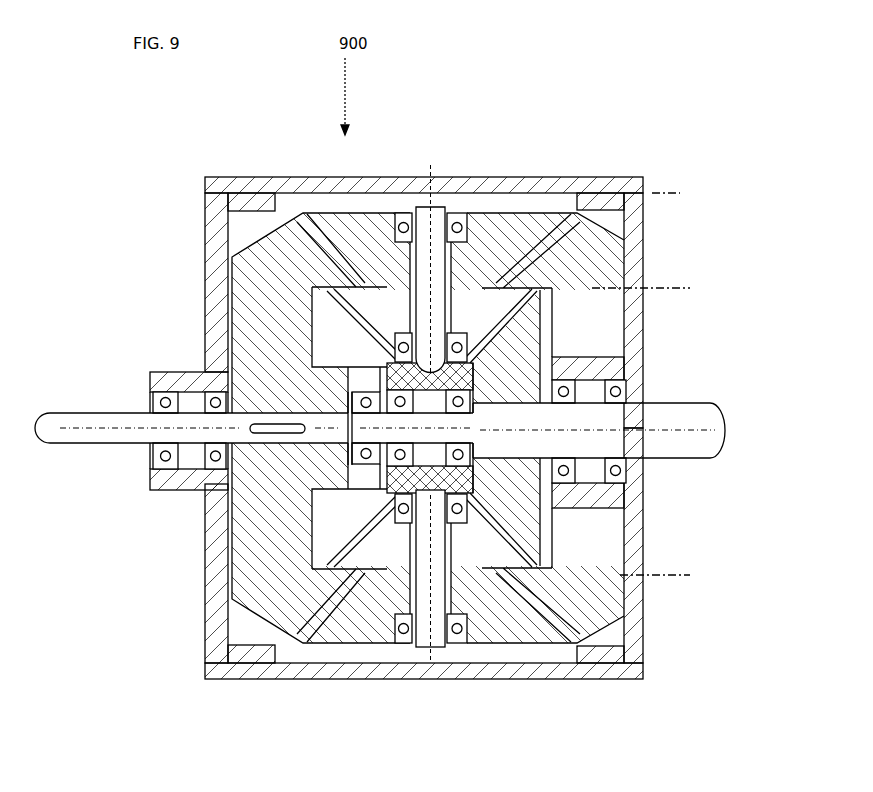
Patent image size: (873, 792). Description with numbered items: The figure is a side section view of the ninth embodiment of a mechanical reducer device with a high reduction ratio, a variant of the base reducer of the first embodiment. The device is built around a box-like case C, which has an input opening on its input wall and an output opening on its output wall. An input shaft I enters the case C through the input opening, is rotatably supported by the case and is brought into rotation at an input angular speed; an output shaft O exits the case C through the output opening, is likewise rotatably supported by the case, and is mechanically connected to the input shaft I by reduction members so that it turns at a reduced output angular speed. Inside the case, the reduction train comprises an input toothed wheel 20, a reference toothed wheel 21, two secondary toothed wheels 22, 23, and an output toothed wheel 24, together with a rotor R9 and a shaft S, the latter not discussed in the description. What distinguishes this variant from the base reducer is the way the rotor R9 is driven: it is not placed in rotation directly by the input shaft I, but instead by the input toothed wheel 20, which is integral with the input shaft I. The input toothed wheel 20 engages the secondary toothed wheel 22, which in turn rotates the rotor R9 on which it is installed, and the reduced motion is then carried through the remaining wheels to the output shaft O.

The box-like case C is at (223, 610).
The input shaft I is at (125, 415).
The output shaft O is at (663, 443).
The support shaft S is at (428, 225).
The input toothed wheel 20 is at (277, 325).
The reference toothed wheel 21 is at (582, 253).
The secondary toothed wheel 22 is at (483, 253).
The secondary toothed wheel 23 is at (283, 262).
The output toothed wheel 24 is at (520, 353).
The rotor R9 is at (330, 493).